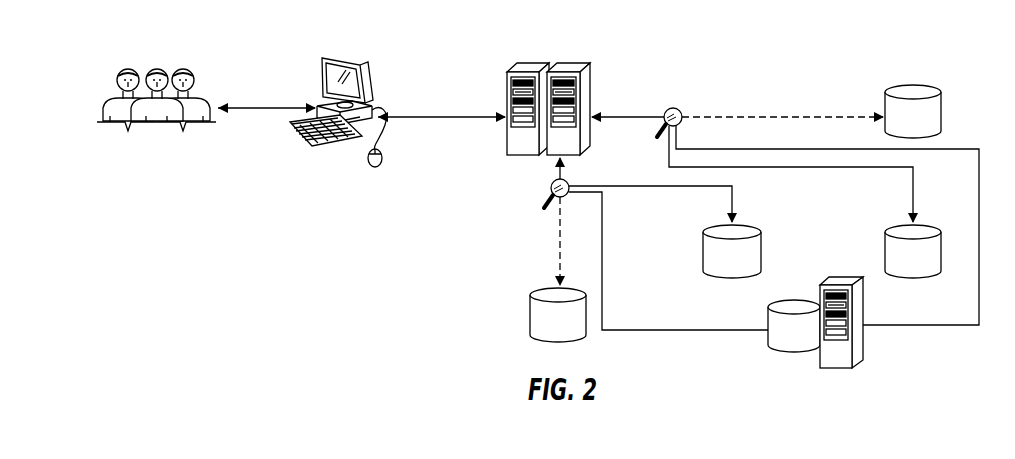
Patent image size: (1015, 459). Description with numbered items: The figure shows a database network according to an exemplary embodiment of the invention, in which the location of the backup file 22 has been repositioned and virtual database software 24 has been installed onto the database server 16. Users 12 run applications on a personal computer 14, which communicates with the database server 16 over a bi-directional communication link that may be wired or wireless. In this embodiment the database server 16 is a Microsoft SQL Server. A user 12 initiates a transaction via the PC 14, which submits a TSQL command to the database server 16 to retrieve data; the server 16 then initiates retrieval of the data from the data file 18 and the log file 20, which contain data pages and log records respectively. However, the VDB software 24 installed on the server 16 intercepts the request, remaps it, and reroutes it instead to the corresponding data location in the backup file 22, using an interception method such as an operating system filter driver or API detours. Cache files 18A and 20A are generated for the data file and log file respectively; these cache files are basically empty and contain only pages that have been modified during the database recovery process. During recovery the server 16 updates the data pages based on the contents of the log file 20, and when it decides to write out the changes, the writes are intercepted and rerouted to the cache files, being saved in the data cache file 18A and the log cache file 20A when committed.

The users 12 is at (156, 67).
The personal computer 14 is at (345, 58).
The database server 16 is at (570, 66).
The data file 18 is at (927, 129).
The data cache file 18A is at (932, 270).
The log file 20 is at (572, 334).
The log cache file 20A is at (752, 270).
The backup file 22 is at (843, 277).
The virtual database software 24 is at (684, 112).